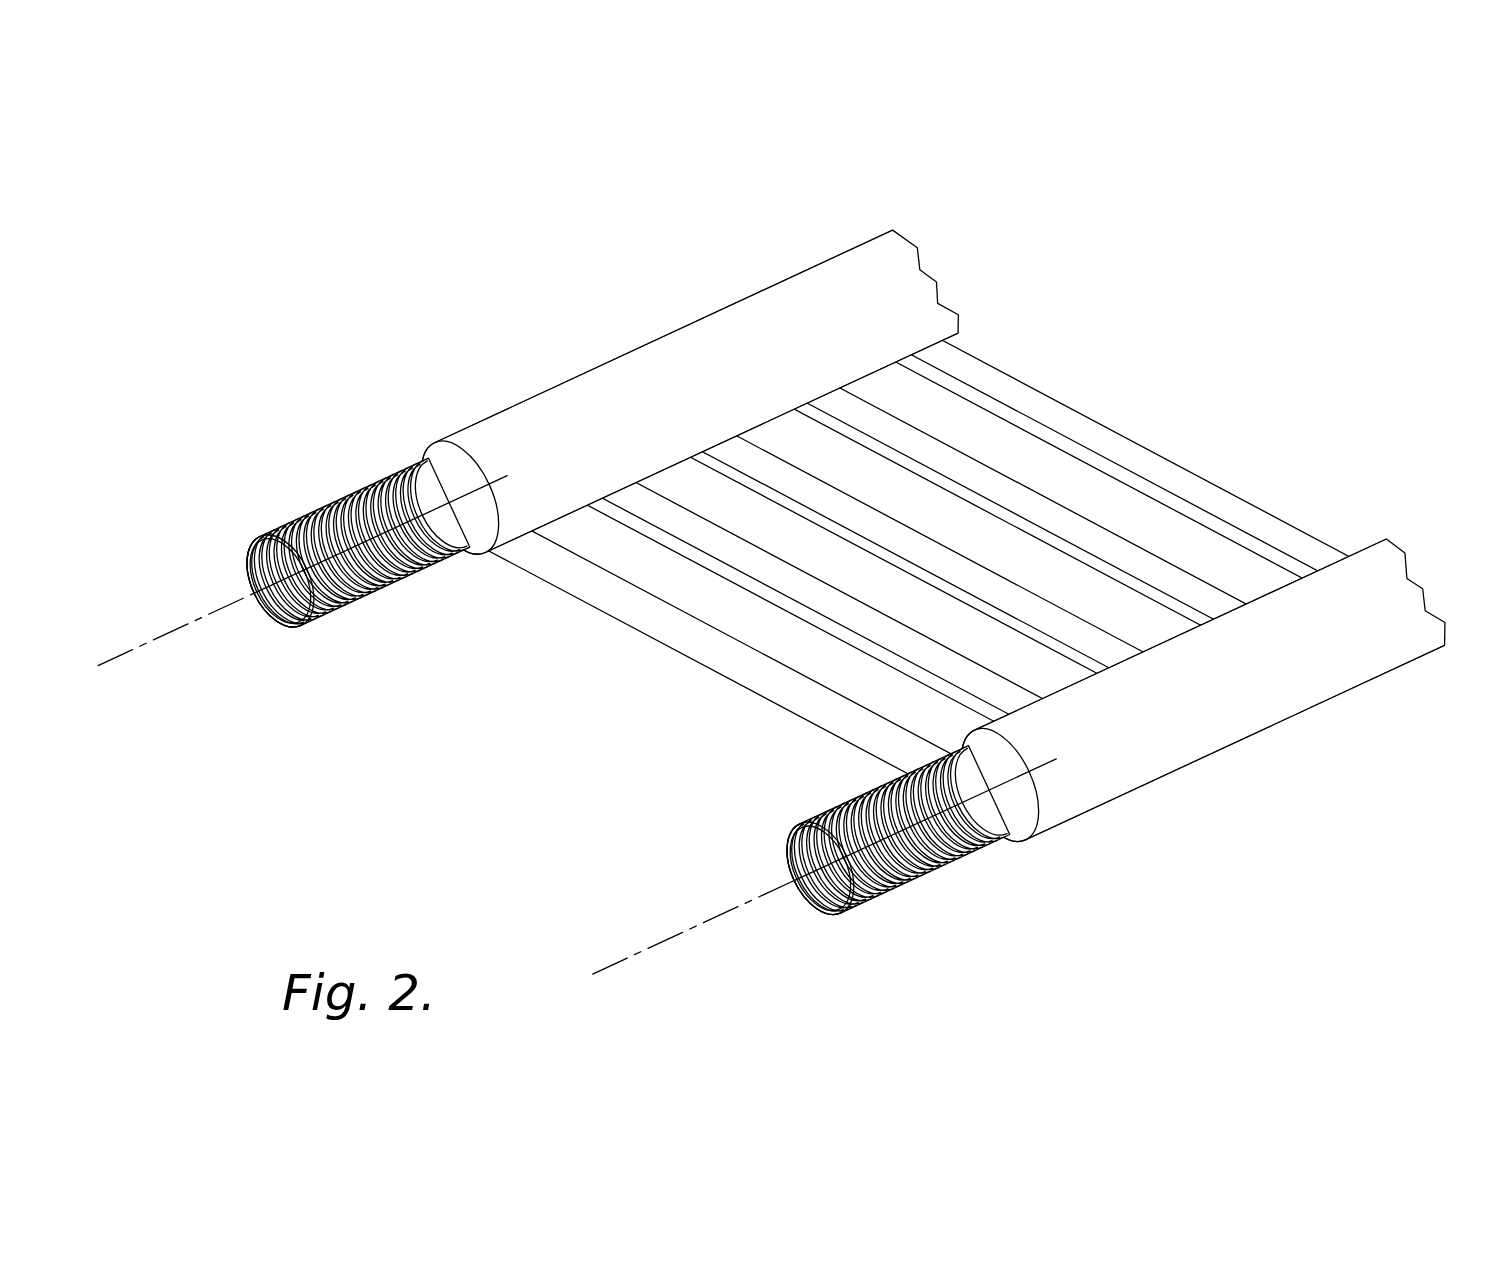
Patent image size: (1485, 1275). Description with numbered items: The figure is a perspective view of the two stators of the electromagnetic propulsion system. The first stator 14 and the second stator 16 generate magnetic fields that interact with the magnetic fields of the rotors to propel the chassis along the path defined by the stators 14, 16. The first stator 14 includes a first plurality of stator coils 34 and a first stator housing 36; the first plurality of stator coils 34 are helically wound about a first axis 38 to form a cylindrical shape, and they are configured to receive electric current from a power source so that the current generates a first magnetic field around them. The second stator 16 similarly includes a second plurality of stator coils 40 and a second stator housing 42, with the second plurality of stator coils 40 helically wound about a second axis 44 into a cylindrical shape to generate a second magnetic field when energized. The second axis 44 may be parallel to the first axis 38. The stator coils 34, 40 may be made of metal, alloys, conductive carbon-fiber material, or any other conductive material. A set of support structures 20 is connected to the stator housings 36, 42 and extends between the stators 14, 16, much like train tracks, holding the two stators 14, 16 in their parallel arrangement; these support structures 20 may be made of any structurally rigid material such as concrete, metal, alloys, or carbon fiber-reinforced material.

The first stator 14 is at (1186, 787).
The second stator 16 is at (565, 348).
The support structures 20 is at (695, 643).
The first plurality of stator coils 34 is at (816, 817).
The first stator housing 36 is at (1353, 672).
The first axis 38 is at (698, 927).
The second plurality of stator coils 40 is at (300, 520).
The second stator housing 42 is at (742, 317).
The second axis 44 is at (173, 630).